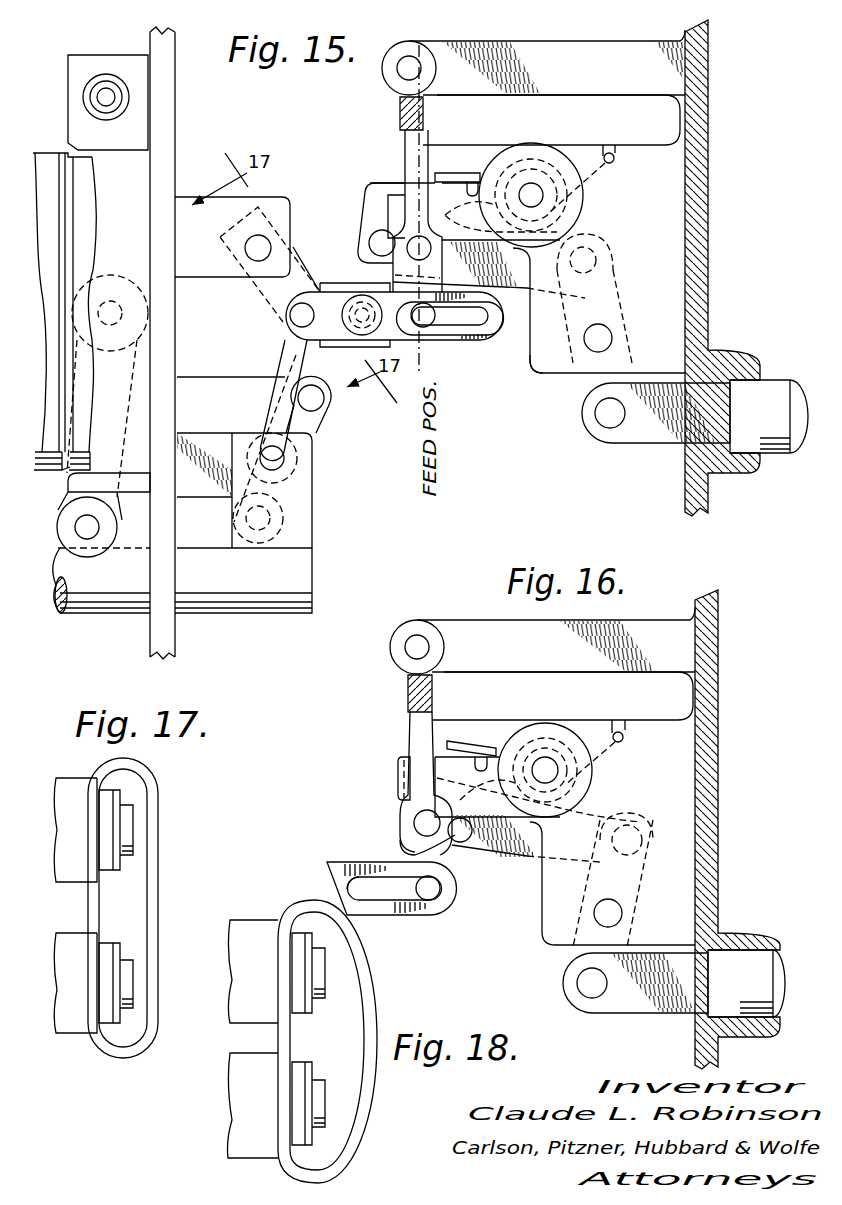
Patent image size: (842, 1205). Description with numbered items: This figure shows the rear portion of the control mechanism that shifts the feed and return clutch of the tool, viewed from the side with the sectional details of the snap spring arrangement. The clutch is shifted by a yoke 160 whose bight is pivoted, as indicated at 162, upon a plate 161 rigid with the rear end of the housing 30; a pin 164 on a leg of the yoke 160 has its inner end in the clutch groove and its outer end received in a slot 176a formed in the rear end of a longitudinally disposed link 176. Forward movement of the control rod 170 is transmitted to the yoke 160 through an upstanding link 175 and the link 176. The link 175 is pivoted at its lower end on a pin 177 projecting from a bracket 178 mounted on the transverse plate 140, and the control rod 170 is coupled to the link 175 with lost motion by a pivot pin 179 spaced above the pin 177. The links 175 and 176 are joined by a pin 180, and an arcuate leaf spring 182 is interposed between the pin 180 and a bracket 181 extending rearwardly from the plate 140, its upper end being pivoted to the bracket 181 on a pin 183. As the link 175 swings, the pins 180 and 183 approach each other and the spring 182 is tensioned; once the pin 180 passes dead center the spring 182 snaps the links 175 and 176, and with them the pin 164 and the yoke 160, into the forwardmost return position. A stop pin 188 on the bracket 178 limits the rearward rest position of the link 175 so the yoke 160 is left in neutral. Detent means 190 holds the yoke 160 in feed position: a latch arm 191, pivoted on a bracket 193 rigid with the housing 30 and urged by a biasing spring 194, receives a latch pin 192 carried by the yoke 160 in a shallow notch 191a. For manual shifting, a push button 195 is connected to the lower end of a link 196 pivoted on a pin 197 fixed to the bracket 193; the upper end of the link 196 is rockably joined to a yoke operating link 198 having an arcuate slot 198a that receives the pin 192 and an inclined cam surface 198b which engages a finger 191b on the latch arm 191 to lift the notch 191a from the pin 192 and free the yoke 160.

In FIG. 15, the housing 30 is at (709, 185).
In FIG. 16, the housing 30 is at (719, 748).
In FIG. 15, the transverse plate 140 is at (177, 637).
In FIG. 15, the yoke 160 is at (427, 160).
In FIG. 16, the yoke 160 is at (413, 732).
In FIG. 15, the plate 161 is at (568, 62).
In FIG. 16, the plate 161 is at (443, 640).
In FIG. 15, the yoke pivot 162 is at (396, 69).
In FIG. 16, the yoke pivot 162 is at (405, 648).
In FIG. 15, the pin 164 is at (430, 330).
In FIG. 15, the control rod 170 is at (300, 580).
In FIG. 15, the upstanding link 175 is at (287, 368).
In FIG. 15, the longitudinally disposed link 176 is at (483, 326).
In FIG. 16, the longitudinally disposed link 176 is at (353, 863).
In FIG. 15, the slot 176a is at (543, 365).
In FIG. 16, the slot 176a is at (384, 897).
In FIG. 15, the pin 177 is at (282, 520).
In FIG. 15, the bracket 178 is at (314, 435).
In FIG. 15, the pivot pin 179 is at (285, 461).
In FIG. 15, the pin 180 is at (290, 314).
In FIG. 17, the pin 180 is at (133, 960).
In FIG. 18, the pin 180 is at (327, 1083).
In FIG. 15, the bracket 181 is at (282, 207).
In FIG. 17, the bracket 181 is at (68, 880).
In FIG. 18, the bracket 181 is at (232, 1056).
In FIG. 15, the arcuate leaf spring 182 is at (312, 290).
In FIG. 17, the arcuate leaf spring 182 is at (156, 868).
In FIG. 18, the arcuate leaf spring 182 is at (366, 1035).
In FIG. 15, the pin 183 is at (271, 244).
In FIG. 17, the pin 183 is at (133, 861).
In FIG. 18, the pin 183 is at (326, 997).
In FIG. 15, the stop pin 188 is at (326, 402).
In FIG. 15, the detent means 190 is at (533, 141).
In FIG. 15, the latch arm 191 is at (581, 213).
In FIG. 16, the latch arm 191 is at (520, 745).
In FIG. 15, the notch 191a is at (449, 248).
In FIG. 15, the finger 191b is at (434, 183).
In FIG. 15, the latch pin 192 is at (388, 258).
In FIG. 16, the latch pin 192 is at (414, 822).
In FIG. 15, the bracket 193 is at (572, 382).
In FIG. 16, the bracket 193 is at (544, 925).
In FIG. 15, the biasing spring 194 is at (462, 177).
In FIG. 15, the push button 195 is at (784, 447).
In FIG. 16, the push button 195 is at (775, 985).
In FIG. 15, the link 196 is at (590, 404).
In FIG. 16, the link 196 is at (568, 950).
In FIG. 15, the pin 197 is at (604, 333).
In FIG. 16, the pin 197 is at (622, 913).
In FIG. 15, the yoke operating link 198 is at (498, 289).
In FIG. 16, the yoke operating link 198 is at (530, 856).
In FIG. 15, the arcuate slot 198a is at (370, 244).
In FIG. 16, the arcuate slot 198a is at (462, 845).
In FIG. 15, the inclined cam surface 198b is at (501, 207).
In FIG. 16, the inclined cam surface 198b is at (467, 771).